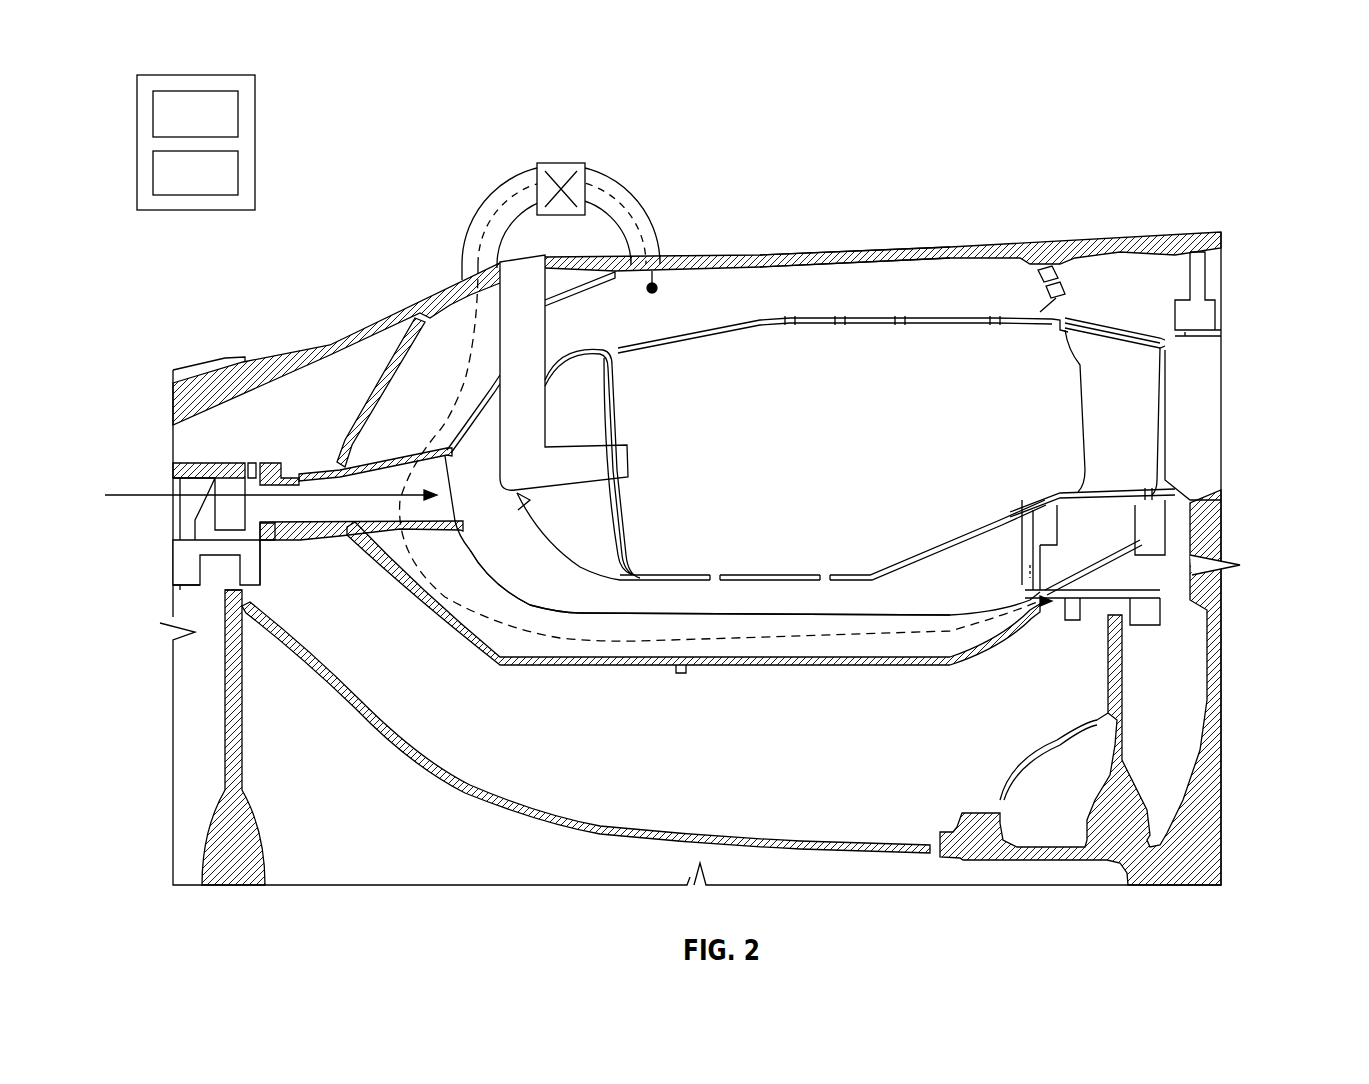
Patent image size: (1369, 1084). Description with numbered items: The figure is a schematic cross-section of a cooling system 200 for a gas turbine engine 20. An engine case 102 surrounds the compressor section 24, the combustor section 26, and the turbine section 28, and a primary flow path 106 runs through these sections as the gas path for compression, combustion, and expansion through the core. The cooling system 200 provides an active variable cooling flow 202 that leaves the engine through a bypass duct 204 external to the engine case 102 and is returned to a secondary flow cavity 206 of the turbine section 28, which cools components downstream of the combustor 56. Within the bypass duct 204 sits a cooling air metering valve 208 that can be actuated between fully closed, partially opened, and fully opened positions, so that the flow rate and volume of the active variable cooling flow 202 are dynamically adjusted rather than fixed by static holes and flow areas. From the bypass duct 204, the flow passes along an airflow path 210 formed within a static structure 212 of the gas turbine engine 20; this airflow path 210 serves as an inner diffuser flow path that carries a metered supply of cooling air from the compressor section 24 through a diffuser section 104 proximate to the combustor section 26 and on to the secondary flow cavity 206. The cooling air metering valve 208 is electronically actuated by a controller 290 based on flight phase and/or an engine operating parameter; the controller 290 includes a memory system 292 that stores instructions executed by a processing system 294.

The gas turbine engine 20 is at (1195, 151).
The compressor section 24 is at (415, 281).
The combustor section 26 is at (815, 216).
The turbine section 28 is at (1240, 329).
The combustor 56 is at (856, 431).
The engine case 102 is at (865, 253).
The diffuser section 104 is at (996, 585).
The primary flow path 106 is at (128, 505).
The cooling system 200 is at (678, 126).
The active variable cooling flow 202 is at (642, 222).
The bypass duct 204 is at (606, 180).
The secondary flow cavity 206 is at (1090, 622).
The cooling air metering valve 208 is at (558, 162).
The airflow path 210 is at (508, 640).
The static structure 212 is at (748, 668).
The controller 290 is at (192, 74).
The memory system 292 is at (217, 131).
The processing system 294 is at (217, 188).